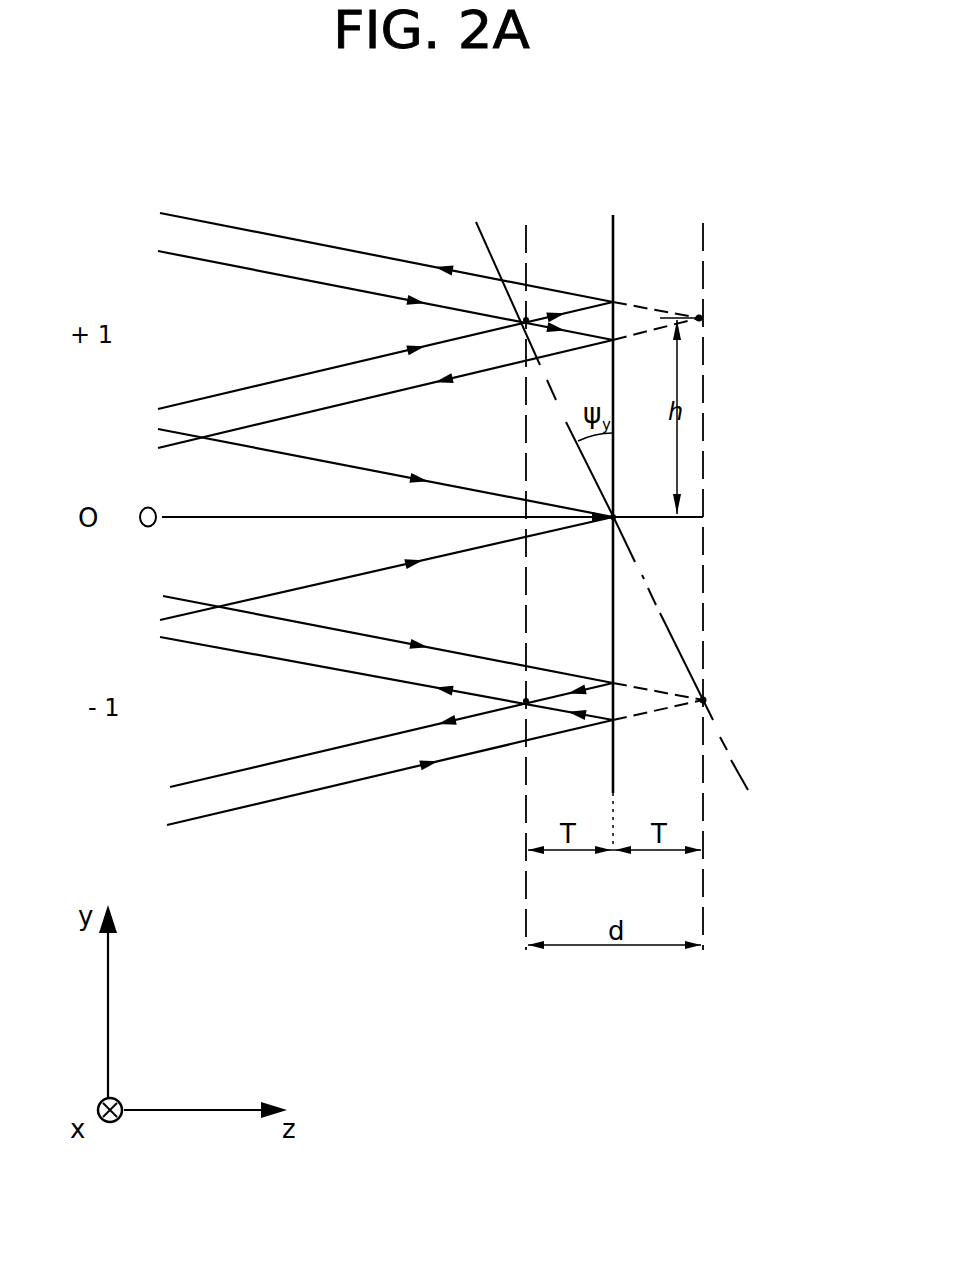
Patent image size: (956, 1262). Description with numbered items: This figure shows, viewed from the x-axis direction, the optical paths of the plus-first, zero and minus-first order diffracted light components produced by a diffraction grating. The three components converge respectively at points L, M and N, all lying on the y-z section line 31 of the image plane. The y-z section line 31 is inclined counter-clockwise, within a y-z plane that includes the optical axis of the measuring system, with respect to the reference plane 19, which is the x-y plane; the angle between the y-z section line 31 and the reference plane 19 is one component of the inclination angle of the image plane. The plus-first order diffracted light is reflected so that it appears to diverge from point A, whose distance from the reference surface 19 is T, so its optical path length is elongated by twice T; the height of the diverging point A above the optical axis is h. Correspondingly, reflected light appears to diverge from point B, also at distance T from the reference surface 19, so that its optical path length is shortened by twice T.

The reference plane 19 is at (613, 228).
The y-z section line of the image plane 31 is at (492, 250).
The diverging point of +1st order diffracted light A is at (714, 320).
The convergence point of −1st order diffracted light N is at (705, 700).
The convergence point of +1st order diffracted light L is at (524, 319).
The diverging point of the other diffracted light B is at (527, 700).
The convergence point of 0 order diffracted light M is at (613, 514).